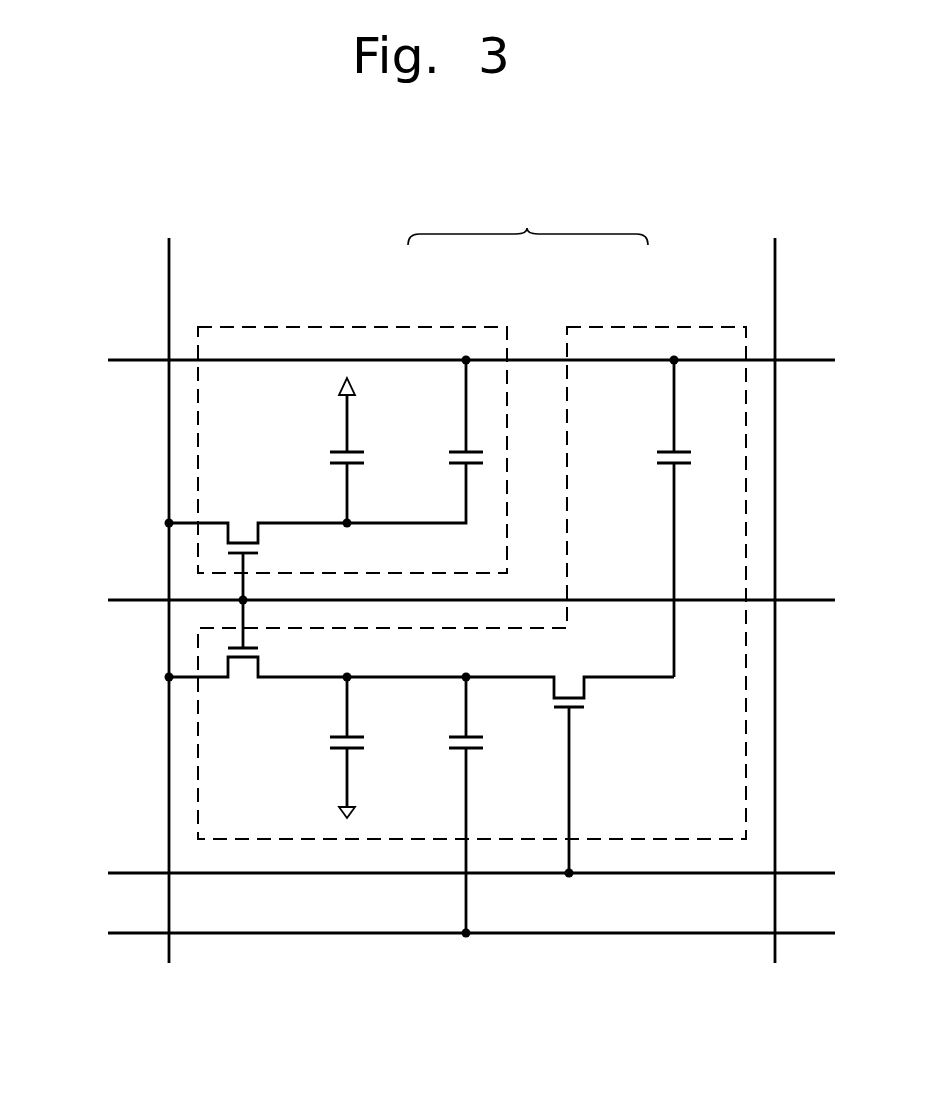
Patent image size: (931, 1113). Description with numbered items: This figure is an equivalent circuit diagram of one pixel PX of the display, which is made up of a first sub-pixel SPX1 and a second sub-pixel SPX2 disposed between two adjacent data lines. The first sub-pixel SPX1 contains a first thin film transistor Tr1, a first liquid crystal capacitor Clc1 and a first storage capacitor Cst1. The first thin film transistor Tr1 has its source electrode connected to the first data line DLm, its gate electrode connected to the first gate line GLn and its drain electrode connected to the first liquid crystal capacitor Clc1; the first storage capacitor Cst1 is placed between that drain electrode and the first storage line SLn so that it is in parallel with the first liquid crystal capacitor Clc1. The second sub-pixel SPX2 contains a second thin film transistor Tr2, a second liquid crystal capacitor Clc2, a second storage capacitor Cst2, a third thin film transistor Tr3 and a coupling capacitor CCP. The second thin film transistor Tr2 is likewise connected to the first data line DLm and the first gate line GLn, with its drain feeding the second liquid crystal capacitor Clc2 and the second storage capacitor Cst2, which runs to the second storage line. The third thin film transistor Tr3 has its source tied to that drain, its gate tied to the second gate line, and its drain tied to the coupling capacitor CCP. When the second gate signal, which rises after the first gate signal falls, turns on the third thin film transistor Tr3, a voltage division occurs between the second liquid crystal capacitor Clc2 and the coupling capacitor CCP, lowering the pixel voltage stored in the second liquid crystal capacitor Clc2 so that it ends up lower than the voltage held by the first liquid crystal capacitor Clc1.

The first data line DLm is at (168, 585).
The first storage line SLn is at (446, 360).
The first gate line GLn is at (446, 600).
The pixel PX is at (528, 221).
The first sub-pixel SPX1 is at (432, 325).
The second sub-pixel SPX2 is at (615, 325).
The first thin film transistor Tr1 is at (256, 546).
The second thin film transistor Tr2 is at (256, 654).
The third thin film transistor Tr3 is at (570, 761).
The first liquid crystal capacitor Clc1 is at (317, 453).
The second liquid crystal capacitor Clc2 is at (317, 746).
The first storage capacitor Cst1 is at (415, 440).
The second storage capacitor Cst2 is at (415, 805).
The coupling capacitor CCP is at (650, 517).